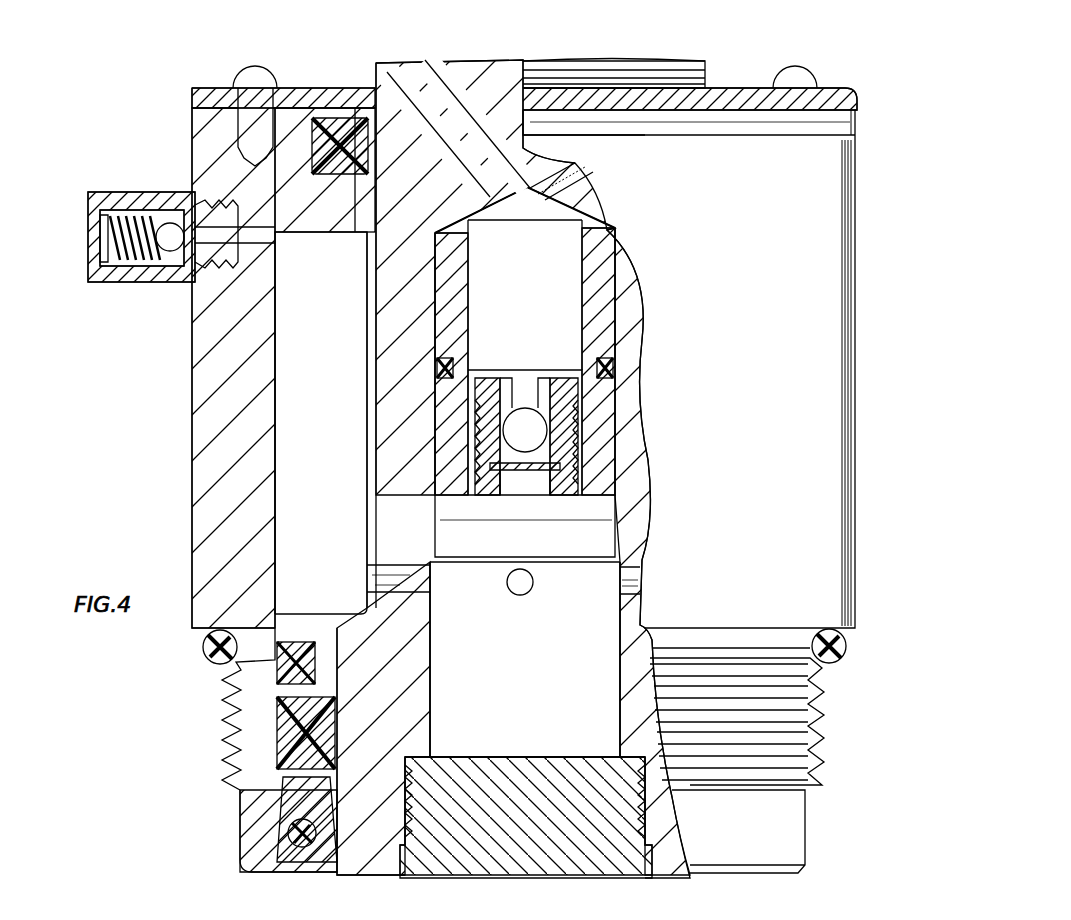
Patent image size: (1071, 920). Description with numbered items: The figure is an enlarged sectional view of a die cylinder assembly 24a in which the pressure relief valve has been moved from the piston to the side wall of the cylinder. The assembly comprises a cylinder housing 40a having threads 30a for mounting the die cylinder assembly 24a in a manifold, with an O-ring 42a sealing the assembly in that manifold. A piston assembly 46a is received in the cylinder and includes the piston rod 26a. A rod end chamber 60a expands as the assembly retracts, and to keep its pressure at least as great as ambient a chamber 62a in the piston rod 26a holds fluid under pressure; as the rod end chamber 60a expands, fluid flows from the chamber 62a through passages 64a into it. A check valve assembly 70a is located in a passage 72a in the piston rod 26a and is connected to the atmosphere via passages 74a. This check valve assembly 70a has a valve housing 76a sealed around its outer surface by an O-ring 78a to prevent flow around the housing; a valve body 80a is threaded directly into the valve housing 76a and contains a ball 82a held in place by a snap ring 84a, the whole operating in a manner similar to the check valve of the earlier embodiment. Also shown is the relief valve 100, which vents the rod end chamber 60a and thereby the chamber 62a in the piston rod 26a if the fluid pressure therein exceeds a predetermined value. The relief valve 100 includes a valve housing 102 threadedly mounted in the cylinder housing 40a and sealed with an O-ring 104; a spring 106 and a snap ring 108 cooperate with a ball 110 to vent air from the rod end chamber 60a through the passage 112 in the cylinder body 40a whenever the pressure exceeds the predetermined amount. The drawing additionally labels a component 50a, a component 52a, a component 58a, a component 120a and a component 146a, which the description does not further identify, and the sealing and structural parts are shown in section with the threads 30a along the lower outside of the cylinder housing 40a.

The die cylinder assembly 24a is at (728, 80).
The piston rod 26a is at (612, 212).
The threads 30a is at (825, 705).
The cylinder housing 40a is at (192, 370).
The O-ring 42a is at (848, 645).
The piston assembly 46a is at (407, 62).
The retaining ring 50a is at (612, 38).
The bottom plug 52a is at (545, 845).
The seal assembly 58a is at (300, 808).
The rod end chamber 60a is at (290, 447).
The chamber 62a is at (548, 682).
The passages 64a is at (367, 577).
The check valve assembly 70a is at (620, 275).
The passage 72a is at (566, 190).
The passages 74a is at (445, 120).
The valve housing 76a is at (600, 433).
The O-ring 78a is at (615, 370).
The valve body 80a is at (545, 397).
The ball 82a is at (545, 437).
The snap ring 84a is at (535, 470).
The relief valve 100 is at (143, 233).
The valve housing 102 is at (125, 195).
The O-ring 104 is at (190, 205).
The spring 106 is at (136, 270).
The snap ring 108 is at (103, 195).
The ball 110 is at (172, 252).
The passage 112 is at (265, 237).
The seal 120a is at (325, 118).
The bore 146a is at (356, 230).